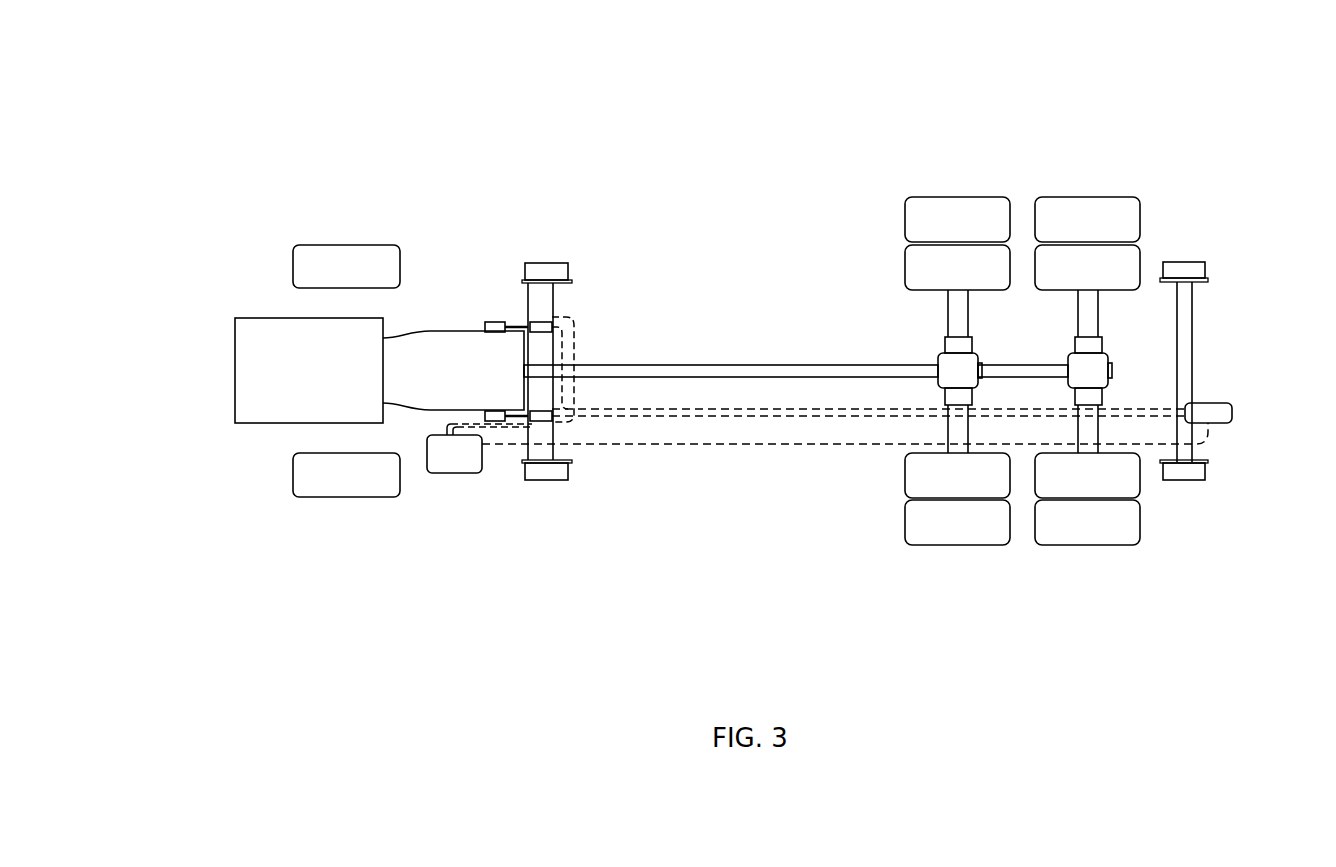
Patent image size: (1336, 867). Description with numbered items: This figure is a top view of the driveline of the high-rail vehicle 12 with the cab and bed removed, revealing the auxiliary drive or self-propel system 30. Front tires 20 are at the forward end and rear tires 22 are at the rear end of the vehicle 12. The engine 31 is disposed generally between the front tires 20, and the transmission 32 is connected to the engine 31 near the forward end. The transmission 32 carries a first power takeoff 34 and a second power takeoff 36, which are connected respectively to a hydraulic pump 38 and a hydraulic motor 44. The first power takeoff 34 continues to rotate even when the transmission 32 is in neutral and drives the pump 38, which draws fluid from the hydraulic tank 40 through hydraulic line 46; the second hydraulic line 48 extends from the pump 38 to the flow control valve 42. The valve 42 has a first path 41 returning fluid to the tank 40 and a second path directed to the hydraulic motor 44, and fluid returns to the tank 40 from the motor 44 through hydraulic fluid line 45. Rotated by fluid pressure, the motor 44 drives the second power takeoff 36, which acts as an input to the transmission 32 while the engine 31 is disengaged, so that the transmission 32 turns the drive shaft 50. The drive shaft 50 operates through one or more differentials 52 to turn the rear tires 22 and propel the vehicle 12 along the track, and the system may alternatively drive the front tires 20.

The vehicle 12 is at (273, 282).
The front tires 20 is at (347, 222).
The rear tires 22 is at (1050, 568).
The auxiliary drive system 30 is at (569, 111).
The engine 31 is at (258, 412).
The transmission 32 is at (425, 345).
The first power takeoff 34 is at (496, 320).
The second power takeoff 36 is at (497, 424).
The hydraulic pump 38 is at (546, 326).
The hydraulic tank 40 is at (457, 475).
The first path 41 is at (694, 447).
The flow control valve 42 is at (1220, 424).
The hydraulic motor 44 is at (548, 424).
The hydraulic fluid line 45 is at (447, 424).
The hydraulic line 46 is at (577, 344).
The second hydraulic line 48 is at (768, 408).
The drive shaft 50 is at (712, 368).
The differentials 52 is at (955, 358).